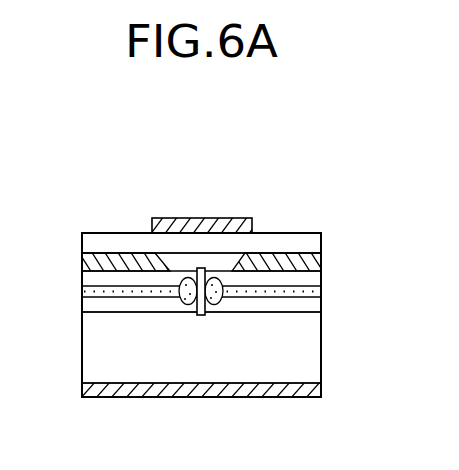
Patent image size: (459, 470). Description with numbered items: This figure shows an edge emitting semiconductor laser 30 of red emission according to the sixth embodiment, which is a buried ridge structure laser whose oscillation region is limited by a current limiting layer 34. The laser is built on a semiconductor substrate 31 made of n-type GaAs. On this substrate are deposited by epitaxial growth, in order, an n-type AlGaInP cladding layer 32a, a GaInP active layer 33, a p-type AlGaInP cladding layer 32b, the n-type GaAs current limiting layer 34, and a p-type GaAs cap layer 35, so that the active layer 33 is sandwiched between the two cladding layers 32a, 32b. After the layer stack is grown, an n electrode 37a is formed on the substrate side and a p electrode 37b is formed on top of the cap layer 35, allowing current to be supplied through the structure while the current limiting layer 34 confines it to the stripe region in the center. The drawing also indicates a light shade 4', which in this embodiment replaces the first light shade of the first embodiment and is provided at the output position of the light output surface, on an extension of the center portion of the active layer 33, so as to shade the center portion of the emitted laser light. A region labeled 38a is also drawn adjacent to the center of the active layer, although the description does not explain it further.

The edge emitting semiconductor laser 30 is at (257, 168).
The semiconductor substrate 31 is at (312, 350).
The n-type AlGaInP cladding layer 32a is at (322, 306).
The p-type AlGaInP cladding layer 32b is at (322, 275).
The GaInP active layer 33 is at (322, 289).
The n-type GaAs current limiting layer 34 is at (322, 257).
The p-type GaAs cap layer 35 is at (288, 240).
The n electrode 37a is at (322, 388).
The p electrode 37b is at (200, 217).
The impurity diffusion region 38a is at (181, 297).
The light shade 4' is at (229, 351).